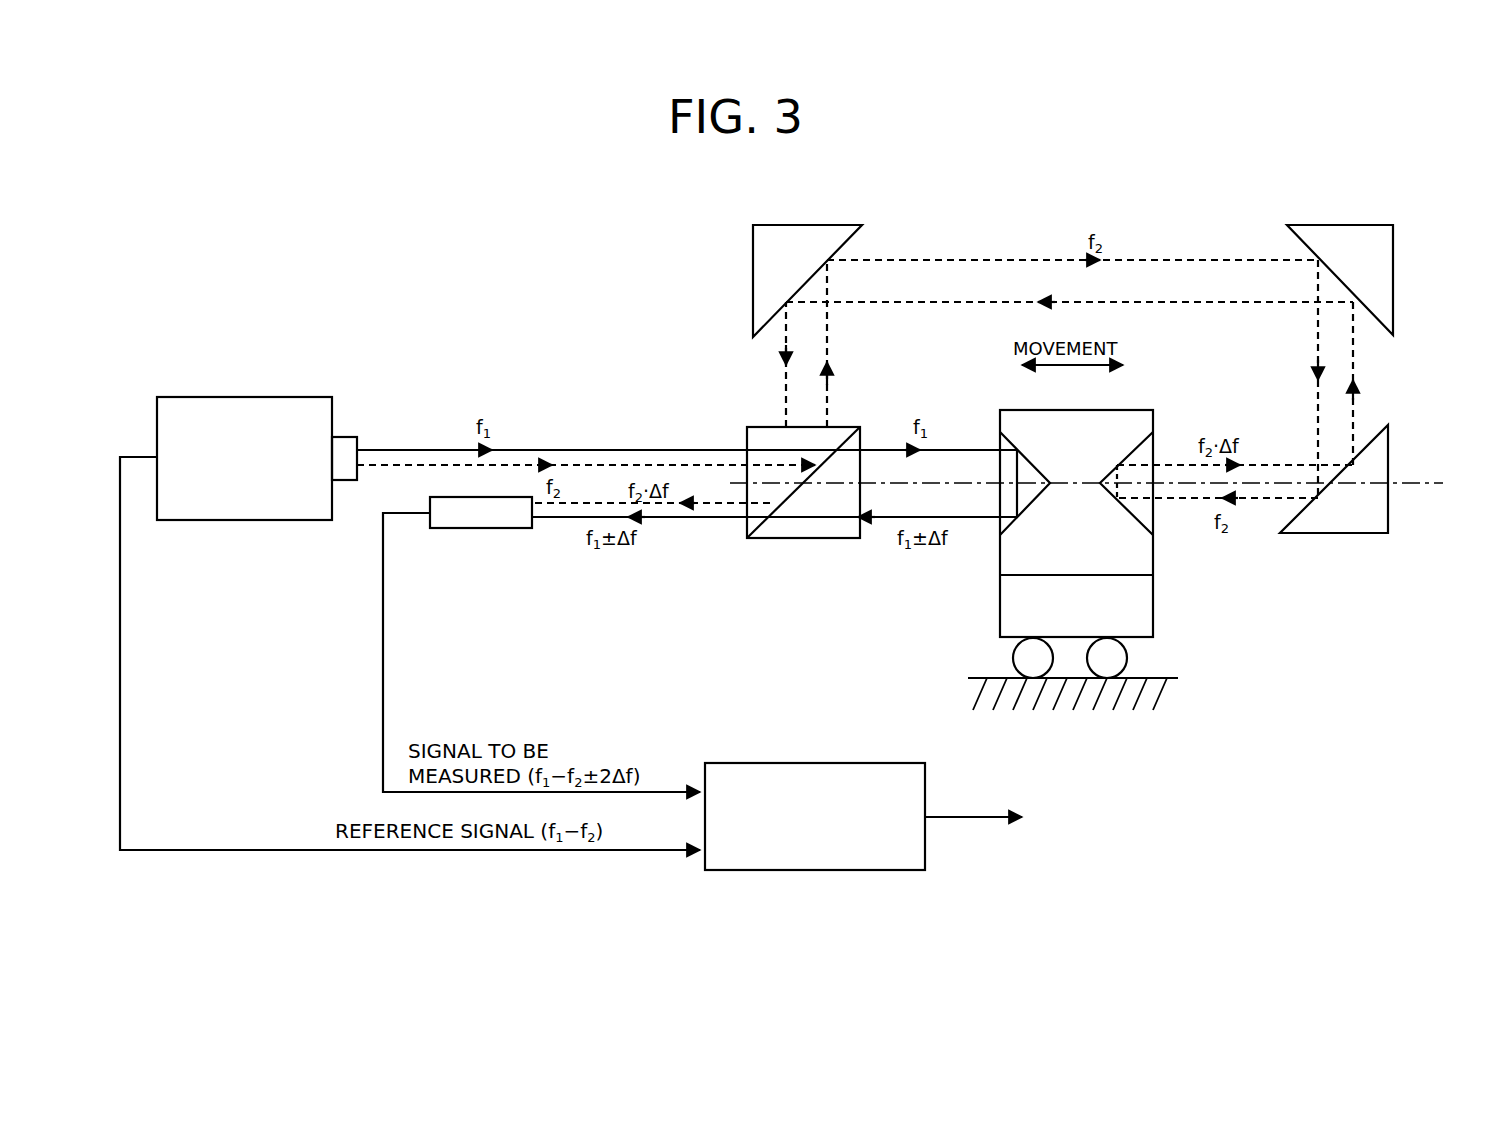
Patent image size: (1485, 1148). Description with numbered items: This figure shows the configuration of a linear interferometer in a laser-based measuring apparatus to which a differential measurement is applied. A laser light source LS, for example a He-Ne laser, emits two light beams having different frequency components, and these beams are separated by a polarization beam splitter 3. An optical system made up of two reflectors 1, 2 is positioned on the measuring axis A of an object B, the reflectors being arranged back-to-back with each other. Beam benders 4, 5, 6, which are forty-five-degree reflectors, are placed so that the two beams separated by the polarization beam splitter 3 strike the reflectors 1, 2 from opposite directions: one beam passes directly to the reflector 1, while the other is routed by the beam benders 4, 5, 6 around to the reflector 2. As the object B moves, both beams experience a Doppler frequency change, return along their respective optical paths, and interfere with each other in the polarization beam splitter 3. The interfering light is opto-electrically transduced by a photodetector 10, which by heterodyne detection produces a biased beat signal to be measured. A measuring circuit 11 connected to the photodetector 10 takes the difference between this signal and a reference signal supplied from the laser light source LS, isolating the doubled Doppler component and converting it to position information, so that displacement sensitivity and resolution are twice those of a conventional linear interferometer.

The reflector 1 is at (1018, 433).
The reflector 2 is at (1122, 455).
The polarization beam splitter 3 is at (760, 540).
The beam bender 4 is at (807, 281).
The beam bender 5 is at (1340, 280).
The beam bender 6 is at (1334, 479).
The photodetector 10 is at (466, 530).
The measuring circuit 11 is at (890, 763).
The laser light source LS is at (296, 397).
The measuring axis A is at (1097, 483).
The object B is at (1153, 607).